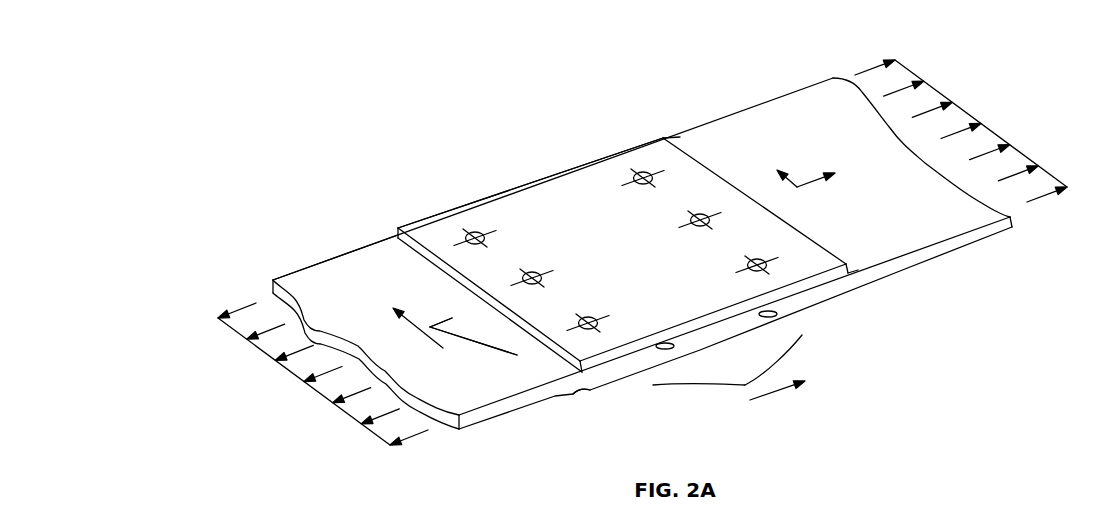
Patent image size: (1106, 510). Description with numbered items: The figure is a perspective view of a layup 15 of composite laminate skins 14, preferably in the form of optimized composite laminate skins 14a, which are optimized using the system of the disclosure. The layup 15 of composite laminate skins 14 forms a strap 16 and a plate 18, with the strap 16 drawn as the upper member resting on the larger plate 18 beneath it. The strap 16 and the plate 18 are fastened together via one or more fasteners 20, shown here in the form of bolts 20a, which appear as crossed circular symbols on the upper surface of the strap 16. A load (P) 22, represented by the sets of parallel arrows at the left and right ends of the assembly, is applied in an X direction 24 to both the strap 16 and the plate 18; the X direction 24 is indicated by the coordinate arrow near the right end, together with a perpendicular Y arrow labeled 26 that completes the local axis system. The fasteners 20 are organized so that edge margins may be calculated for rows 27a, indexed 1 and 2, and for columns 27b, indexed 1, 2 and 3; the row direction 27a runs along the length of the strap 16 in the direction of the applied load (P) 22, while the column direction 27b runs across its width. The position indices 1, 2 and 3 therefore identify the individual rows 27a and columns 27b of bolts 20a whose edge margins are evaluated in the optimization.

The composite laminate skin 14 is at (573, 108).
The optimized composite laminate skin 14a is at (628, 122).
The layup 15 is at (532, 185).
The strap 16 is at (845, 284).
The plate 18 is at (590, 392).
The fasteners 20 is at (695, 259).
The bolts 20a is at (600, 320).
The load (P) 22 is at (348, 418).
The X direction 24 is at (813, 184).
The Y axis 26 is at (790, 181).
The rows 27a is at (772, 393).
The columns 27b is at (417, 325).
The row/column one 1 is at (587, 364).
The row/column two 2 is at (624, 345).
The column three 3 is at (430, 327).